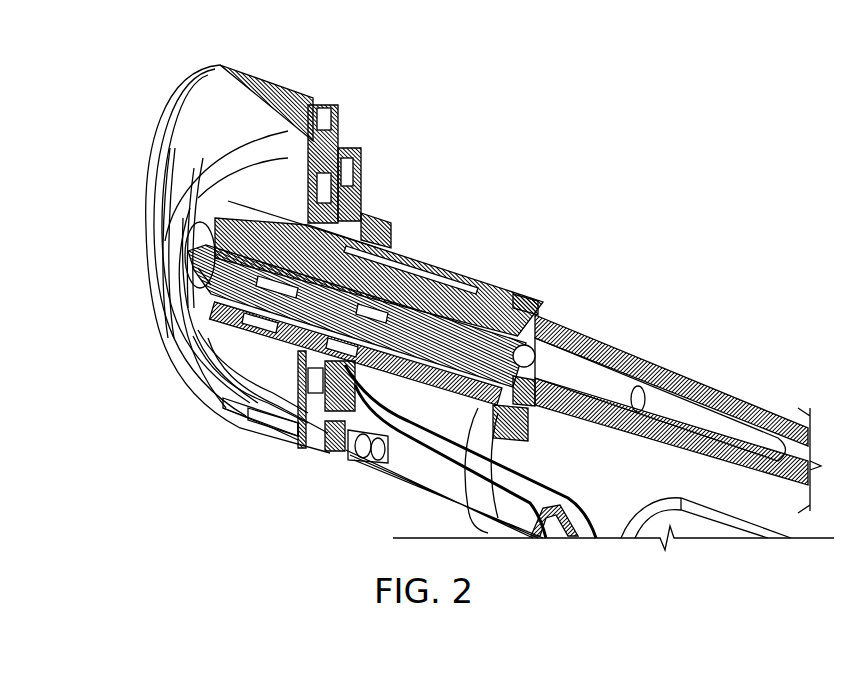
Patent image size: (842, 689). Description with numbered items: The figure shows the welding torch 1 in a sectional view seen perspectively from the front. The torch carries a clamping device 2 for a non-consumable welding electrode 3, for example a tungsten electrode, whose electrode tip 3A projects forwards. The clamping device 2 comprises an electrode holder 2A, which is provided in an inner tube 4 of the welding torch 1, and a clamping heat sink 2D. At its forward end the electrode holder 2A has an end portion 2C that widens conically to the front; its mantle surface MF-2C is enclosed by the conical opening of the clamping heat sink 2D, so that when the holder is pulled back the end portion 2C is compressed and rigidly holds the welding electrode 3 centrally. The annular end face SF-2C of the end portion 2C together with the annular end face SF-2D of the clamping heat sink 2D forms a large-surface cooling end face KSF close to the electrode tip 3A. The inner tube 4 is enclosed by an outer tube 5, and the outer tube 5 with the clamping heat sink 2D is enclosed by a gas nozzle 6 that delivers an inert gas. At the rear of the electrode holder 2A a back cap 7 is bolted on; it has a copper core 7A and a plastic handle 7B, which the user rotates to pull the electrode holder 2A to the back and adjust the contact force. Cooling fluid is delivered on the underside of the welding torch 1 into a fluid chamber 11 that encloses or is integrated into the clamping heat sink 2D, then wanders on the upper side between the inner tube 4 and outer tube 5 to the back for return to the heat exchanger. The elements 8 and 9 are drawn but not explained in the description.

The welding torch 1 is at (478, 211).
The clamping device 2 is at (116, 212).
The electrode holder 2A is at (527, 306).
The end portion 2C is at (185, 328).
The clamping heat sink 2D is at (182, 286).
The welding electrode 3 is at (371, 215).
The electrode tip 3A is at (185, 238).
The inner tube 4 is at (456, 272).
The outer tube 5 is at (442, 266).
The gas nozzle 6 is at (292, 88).
The back cap 7 is at (643, 348).
The core 7A is at (573, 370).
The handle 7B is at (703, 447).
The bracket 8 is at (565, 498).
The support 9 is at (495, 436).
The fluid chamber 11 is at (225, 395).
The cooling end face KSF is at (186, 160).
The annular end face of the clamping heat sink SF-2D is at (157, 150).
The annular end face of the end portion SF-2C is at (335, 145).
The mantle surface of the end portion MF-2C is at (195, 340).